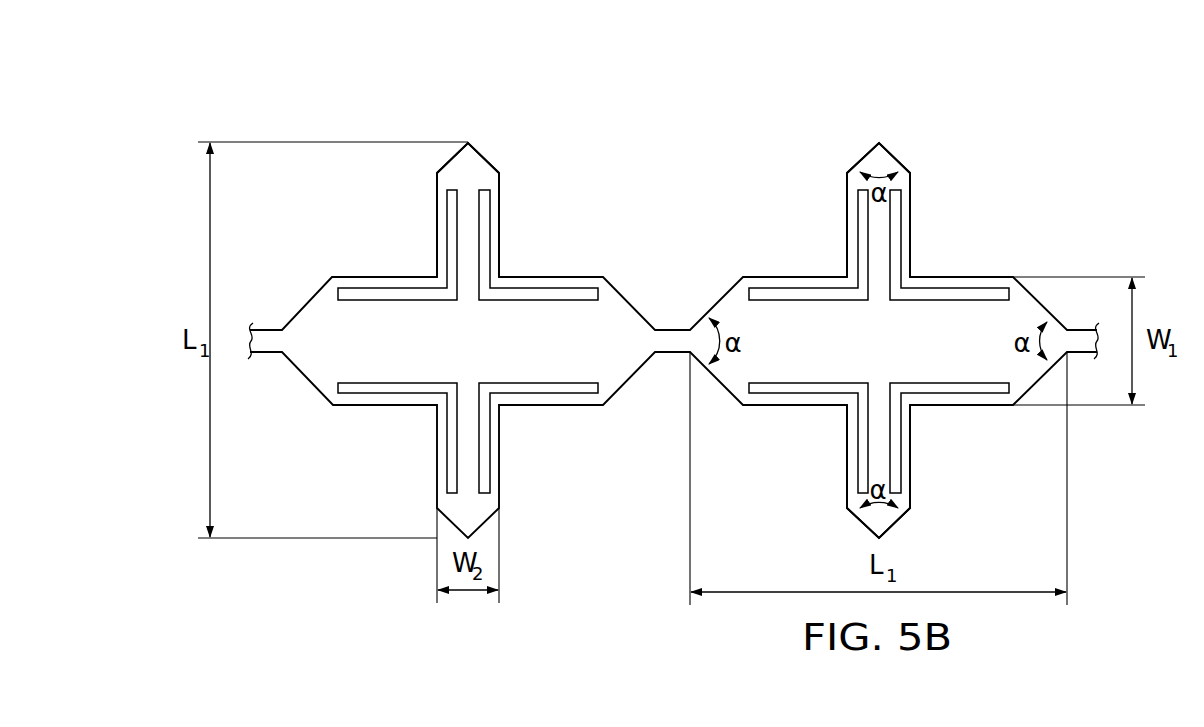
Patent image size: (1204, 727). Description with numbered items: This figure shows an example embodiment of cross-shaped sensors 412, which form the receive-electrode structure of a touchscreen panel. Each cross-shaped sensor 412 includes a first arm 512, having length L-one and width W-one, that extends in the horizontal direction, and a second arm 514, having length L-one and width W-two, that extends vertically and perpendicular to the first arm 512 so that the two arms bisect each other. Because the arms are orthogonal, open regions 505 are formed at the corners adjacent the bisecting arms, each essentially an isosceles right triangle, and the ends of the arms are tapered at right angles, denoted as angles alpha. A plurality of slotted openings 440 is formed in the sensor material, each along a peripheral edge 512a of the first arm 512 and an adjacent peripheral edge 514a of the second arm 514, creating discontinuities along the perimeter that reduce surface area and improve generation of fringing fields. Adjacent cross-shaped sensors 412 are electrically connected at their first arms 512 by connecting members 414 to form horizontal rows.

The cross-shaped sensor 412 is at (400, 112).
The connecting member 414 is at (676, 340).
The slotted opening 440 is at (398, 300).
The open region 505 is at (400, 233).
The first arm 512 is at (364, 276).
The edge of first arm 512a is at (947, 407).
The second arm 514 is at (502, 203).
The edge of second arm 514a is at (910, 483).